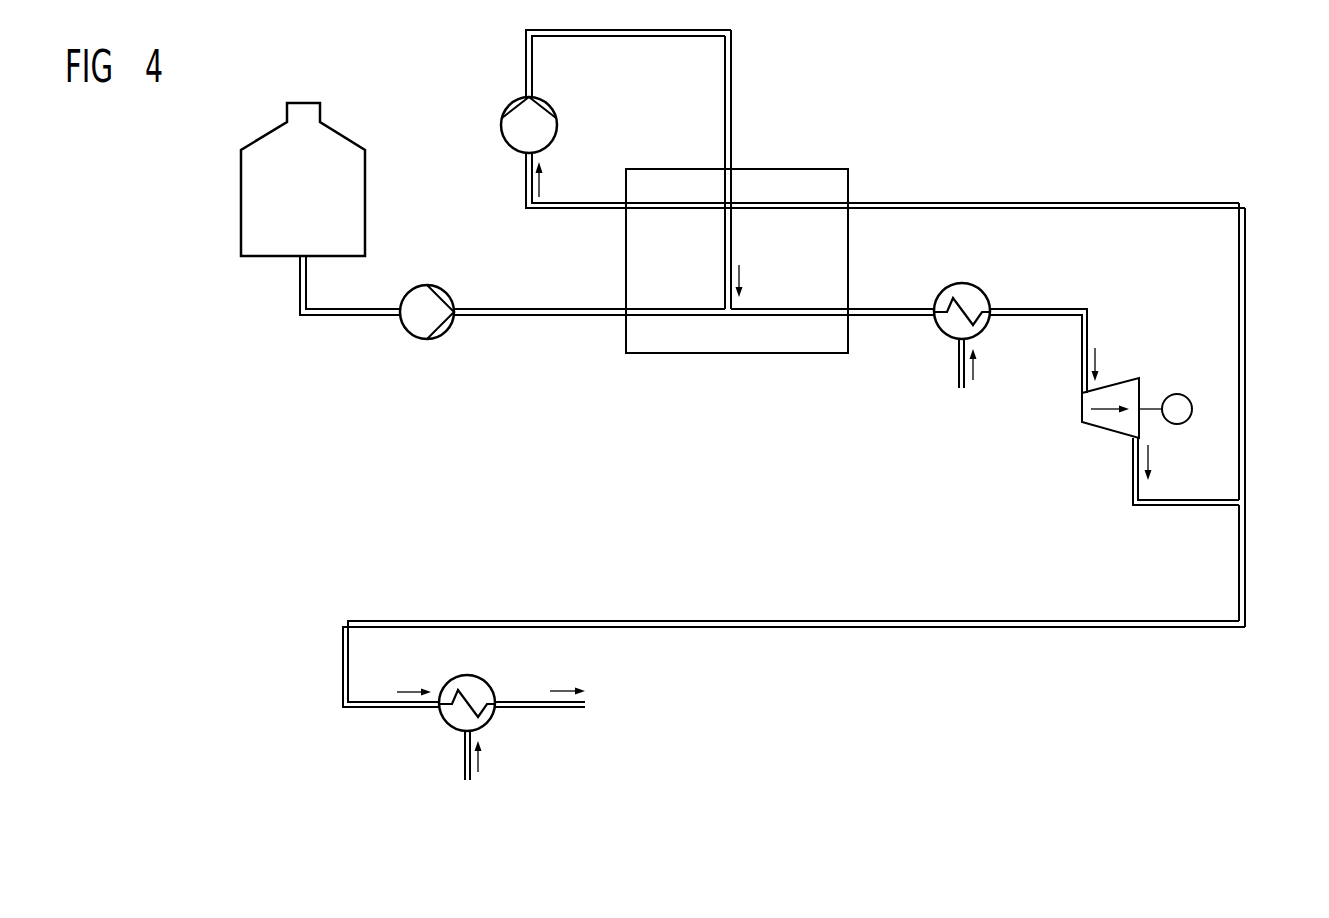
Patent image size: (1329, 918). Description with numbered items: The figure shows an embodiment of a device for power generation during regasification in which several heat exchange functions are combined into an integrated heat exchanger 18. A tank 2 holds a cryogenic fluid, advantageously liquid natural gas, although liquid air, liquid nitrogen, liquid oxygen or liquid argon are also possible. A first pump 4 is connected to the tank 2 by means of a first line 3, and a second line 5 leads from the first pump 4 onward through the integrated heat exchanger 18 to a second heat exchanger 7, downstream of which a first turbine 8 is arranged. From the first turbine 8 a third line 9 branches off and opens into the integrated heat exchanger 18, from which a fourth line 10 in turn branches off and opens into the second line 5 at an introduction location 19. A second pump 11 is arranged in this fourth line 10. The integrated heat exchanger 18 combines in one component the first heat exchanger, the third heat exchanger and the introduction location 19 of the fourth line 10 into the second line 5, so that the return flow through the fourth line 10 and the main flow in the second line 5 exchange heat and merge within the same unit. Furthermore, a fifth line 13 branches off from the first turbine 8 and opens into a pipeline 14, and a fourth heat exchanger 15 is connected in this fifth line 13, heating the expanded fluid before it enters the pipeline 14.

The tank 2 is at (258, 195).
The first line 3 is at (347, 316).
The first pump 4 is at (413, 340).
The second line 5 is at (548, 316).
The second heat exchanger 7 is at (940, 340).
The first turbine 8 is at (1105, 432).
The third line 9 is at (1245, 330).
The fourth line 10 is at (566, 209).
The second pump 11 is at (505, 143).
The fifth line 13 is at (1245, 560).
The pipeline 14 is at (543, 708).
The fourth heat exchanger 15 is at (442, 730).
The integrated heat exchanger 18 is at (803, 353).
The introduction location 19 is at (729, 316).